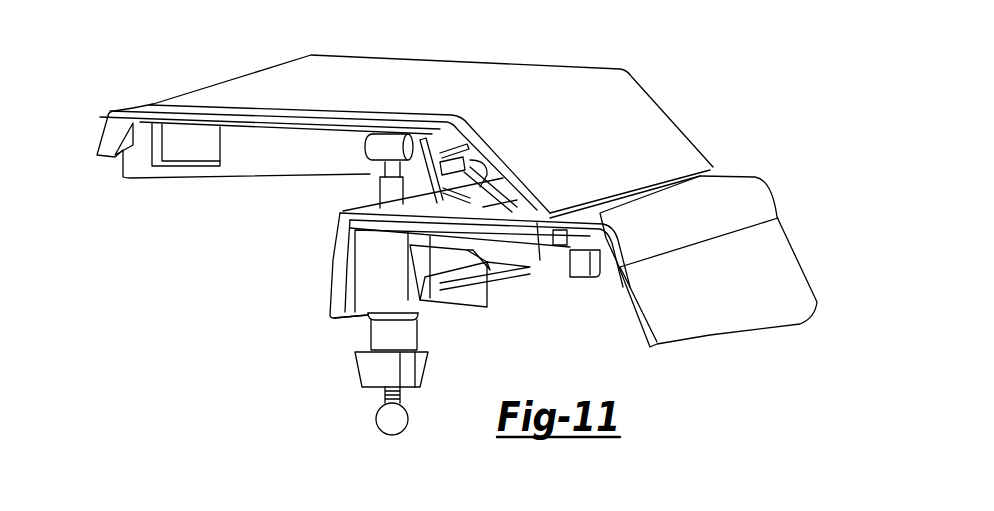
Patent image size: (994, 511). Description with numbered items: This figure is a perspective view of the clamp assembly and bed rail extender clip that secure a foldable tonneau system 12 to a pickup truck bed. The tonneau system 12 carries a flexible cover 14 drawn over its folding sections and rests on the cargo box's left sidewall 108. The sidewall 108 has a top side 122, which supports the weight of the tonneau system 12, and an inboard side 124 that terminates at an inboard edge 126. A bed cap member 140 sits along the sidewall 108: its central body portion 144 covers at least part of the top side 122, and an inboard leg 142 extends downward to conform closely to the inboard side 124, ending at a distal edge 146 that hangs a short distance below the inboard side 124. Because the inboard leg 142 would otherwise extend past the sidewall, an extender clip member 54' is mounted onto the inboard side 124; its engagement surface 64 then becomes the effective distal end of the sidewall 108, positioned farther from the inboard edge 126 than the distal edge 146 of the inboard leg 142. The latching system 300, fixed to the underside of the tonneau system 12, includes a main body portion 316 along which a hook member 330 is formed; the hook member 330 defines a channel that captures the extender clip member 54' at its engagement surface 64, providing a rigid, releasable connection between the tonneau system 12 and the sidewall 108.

The foldable tonneau system 12 is at (742, 78).
The cover 14 is at (477, 75).
The extender clip member 54' is at (494, 298).
The engagement surface 64 is at (428, 350).
The left sidewall 108 is at (777, 267).
The top side 122 is at (560, 246).
The inboard side 124 is at (355, 272).
The inboard edge 126 is at (370, 325).
The bed cap member 140 is at (760, 170).
The inboard leg 142 is at (335, 248).
The central body portion 144 is at (537, 227).
The distal edge 146 is at (355, 317).
The latching system 300 is at (347, 414).
The main body portion 316 is at (443, 310).
The hook member 330 is at (460, 315).